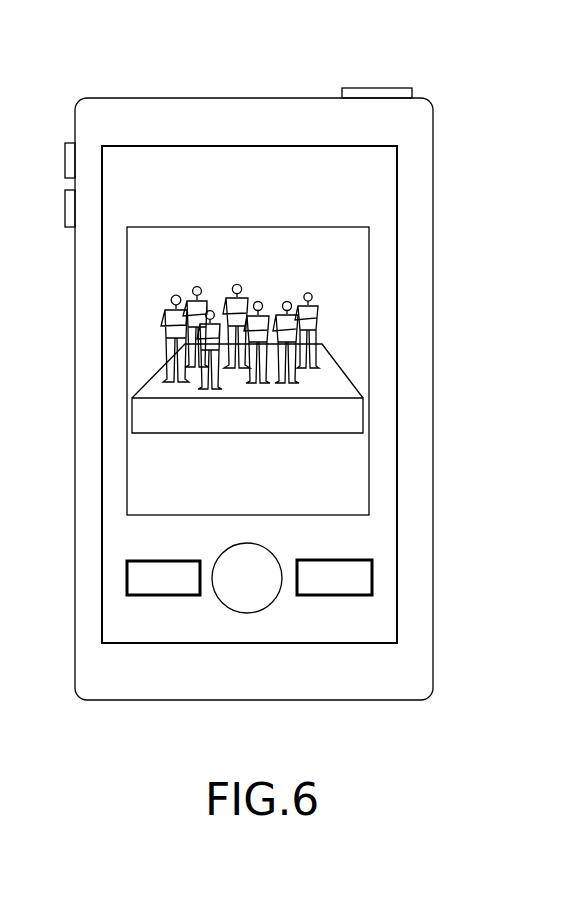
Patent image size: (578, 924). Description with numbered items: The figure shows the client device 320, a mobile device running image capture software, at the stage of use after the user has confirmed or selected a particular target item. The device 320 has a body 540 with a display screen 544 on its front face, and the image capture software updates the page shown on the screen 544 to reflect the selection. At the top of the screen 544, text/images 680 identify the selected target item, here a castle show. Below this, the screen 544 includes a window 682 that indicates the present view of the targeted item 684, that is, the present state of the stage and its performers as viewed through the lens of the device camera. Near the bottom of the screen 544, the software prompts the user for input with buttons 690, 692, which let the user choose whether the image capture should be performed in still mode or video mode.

The client device 320 is at (304, 394).
The body 540 is at (440, 676).
The display screen 544 is at (398, 588).
The text/images 680 is at (306, 348).
The window 682 is at (378, 369).
The targeted item 684 is at (338, 448).
The still mode button 690 is at (185, 596).
The video mode button 692 is at (330, 596).